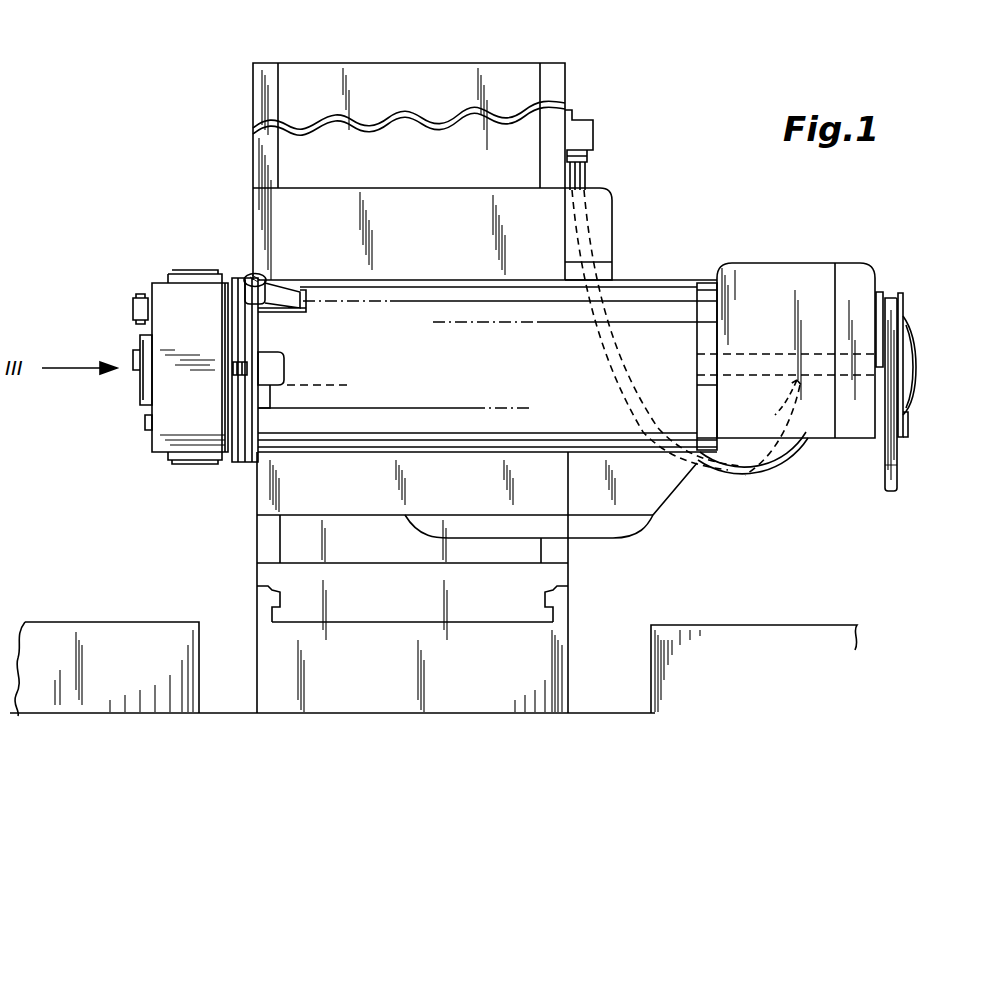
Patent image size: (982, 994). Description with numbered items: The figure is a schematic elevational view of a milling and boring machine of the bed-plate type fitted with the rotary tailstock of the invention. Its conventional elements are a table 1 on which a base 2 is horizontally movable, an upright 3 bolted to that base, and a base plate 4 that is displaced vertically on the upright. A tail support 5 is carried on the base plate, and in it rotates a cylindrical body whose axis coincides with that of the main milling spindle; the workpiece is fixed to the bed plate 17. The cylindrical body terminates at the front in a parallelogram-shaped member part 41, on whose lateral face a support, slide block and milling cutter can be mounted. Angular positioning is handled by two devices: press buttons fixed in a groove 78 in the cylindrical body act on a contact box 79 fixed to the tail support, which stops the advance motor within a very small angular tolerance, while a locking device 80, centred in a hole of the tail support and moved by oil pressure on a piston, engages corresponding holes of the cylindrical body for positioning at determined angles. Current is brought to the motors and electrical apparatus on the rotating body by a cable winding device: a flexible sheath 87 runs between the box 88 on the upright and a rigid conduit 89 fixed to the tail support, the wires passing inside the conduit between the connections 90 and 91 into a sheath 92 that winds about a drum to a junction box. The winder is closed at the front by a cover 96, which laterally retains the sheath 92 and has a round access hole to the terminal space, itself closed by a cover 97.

The table 1 is at (556, 657).
The base 2 is at (553, 574).
The upright 3 is at (553, 83).
The base plate 4 is at (410, 205).
The tail support 5 is at (430, 294).
The bed plate 17 is at (124, 636).
The parallelogram-shaped member part 41 is at (162, 435).
The groove 78 is at (239, 465).
The contact box 79 is at (237, 368).
The locking device 80 is at (250, 274).
The flexible sheath 87 is at (738, 468).
The box 88 is at (592, 135).
The rigid conduit 89 is at (752, 364).
The connection 90 is at (790, 390).
The connection 91 is at (897, 418).
The sheath 92 is at (895, 474).
The cover 96 is at (904, 298).
The cover 97 is at (912, 340).